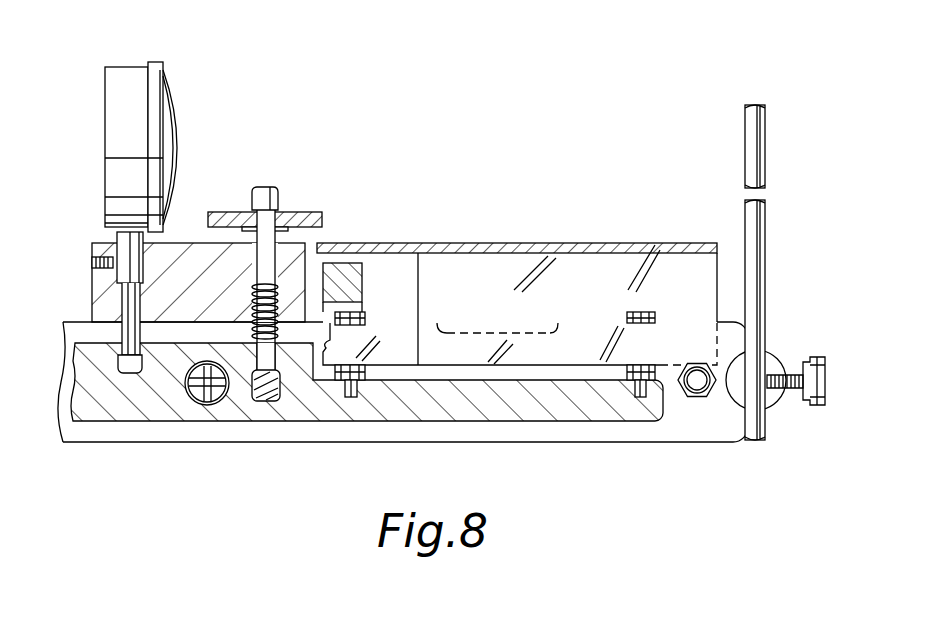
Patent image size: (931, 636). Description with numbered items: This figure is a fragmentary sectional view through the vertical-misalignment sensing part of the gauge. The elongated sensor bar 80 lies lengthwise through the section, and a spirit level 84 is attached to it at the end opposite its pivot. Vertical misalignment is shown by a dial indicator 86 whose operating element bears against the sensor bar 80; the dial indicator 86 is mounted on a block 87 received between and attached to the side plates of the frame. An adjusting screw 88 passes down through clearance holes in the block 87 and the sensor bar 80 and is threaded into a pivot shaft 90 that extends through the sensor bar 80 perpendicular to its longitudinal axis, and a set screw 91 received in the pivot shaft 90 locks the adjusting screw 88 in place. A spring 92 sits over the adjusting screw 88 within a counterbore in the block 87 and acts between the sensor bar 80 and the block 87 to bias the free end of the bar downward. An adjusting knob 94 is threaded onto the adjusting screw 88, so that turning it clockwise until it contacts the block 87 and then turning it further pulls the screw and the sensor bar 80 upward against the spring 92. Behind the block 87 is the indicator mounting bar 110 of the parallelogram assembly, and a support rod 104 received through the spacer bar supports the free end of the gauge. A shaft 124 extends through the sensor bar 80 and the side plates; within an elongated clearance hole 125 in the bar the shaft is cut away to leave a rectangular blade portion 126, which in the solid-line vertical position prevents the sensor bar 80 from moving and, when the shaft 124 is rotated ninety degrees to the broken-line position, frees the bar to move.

The sensor bar 80 is at (123, 421).
The spirit level 84 is at (460, 322).
The dial indicator 86 is at (126, 67).
The block 87 is at (187, 243).
The adjusting screw 88 is at (280, 206).
The pivot shaft 90 is at (258, 403).
The set screw 91 is at (266, 402).
The spring 92 is at (305, 280).
The adjusting knob 94 is at (220, 212).
The support rod 104 is at (765, 222).
The indicator mounting bar 110 is at (362, 272).
The shaft 124 is at (187, 395).
The elongated clearance hole 125 is at (225, 393).
The blade portion 126 is at (207, 403).